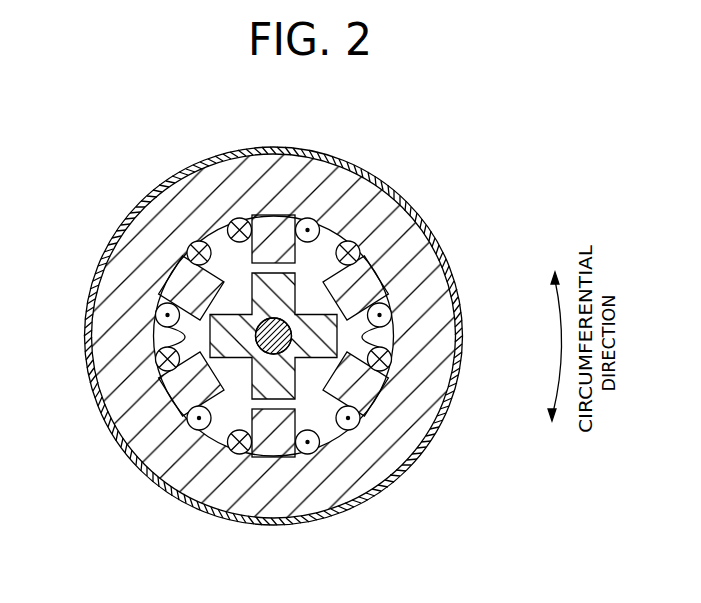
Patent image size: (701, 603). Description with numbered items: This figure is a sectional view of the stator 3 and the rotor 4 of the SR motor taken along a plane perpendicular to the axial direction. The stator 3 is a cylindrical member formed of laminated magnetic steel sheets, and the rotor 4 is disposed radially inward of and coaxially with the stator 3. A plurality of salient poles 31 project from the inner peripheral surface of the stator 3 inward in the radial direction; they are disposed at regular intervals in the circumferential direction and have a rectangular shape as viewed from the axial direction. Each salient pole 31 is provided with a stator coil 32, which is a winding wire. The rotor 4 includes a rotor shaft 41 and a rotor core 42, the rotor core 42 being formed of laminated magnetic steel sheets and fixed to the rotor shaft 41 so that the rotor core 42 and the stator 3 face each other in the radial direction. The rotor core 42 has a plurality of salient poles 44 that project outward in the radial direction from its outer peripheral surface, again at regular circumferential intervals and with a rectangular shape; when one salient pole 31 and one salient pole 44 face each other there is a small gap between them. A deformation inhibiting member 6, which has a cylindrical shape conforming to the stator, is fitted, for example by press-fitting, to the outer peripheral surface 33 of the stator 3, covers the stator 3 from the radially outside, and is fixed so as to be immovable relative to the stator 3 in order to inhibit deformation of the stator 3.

The stator 3 is at (404, 201).
The rotor 4 is at (242, 284).
The deformation inhibiting member 6 is at (285, 150).
The outer peripheral surface 33 is at (322, 153).
The salient pole 31 is at (342, 242).
The stator coil 32 is at (200, 240).
The rotor shaft 41 is at (278, 352).
The rotor core 42 is at (222, 497).
The salient pole 44 is at (392, 282).